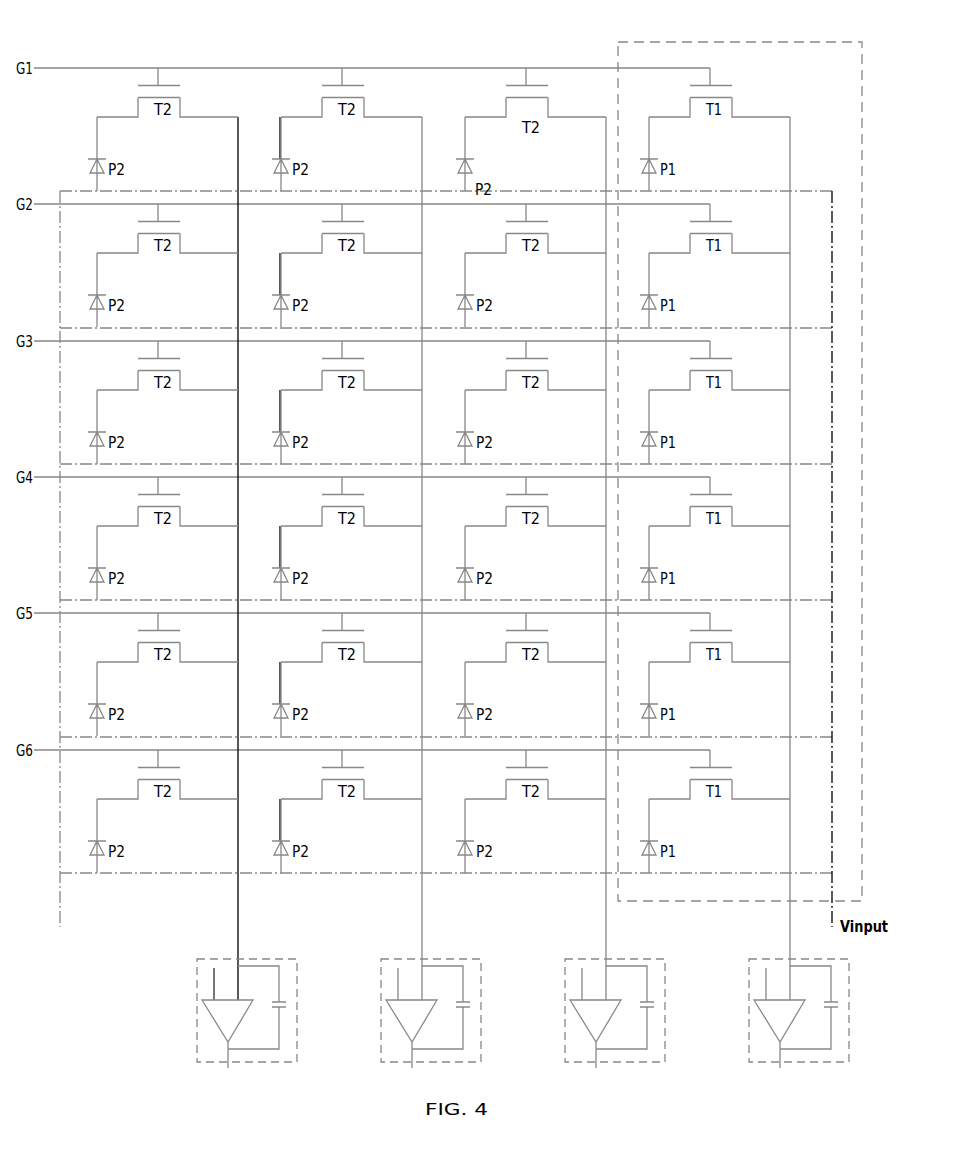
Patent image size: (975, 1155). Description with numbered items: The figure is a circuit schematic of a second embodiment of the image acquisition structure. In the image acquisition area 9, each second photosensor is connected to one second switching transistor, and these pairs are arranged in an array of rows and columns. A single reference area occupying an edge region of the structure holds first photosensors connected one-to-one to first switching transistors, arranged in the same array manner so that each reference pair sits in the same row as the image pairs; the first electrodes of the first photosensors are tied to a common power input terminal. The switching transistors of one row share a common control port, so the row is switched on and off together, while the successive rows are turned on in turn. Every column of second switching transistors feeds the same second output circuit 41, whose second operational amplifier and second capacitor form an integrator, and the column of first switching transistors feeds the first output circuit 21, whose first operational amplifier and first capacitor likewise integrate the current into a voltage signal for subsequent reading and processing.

The image acquisition area 9 is at (748, 63).
The second output circuit 41 is at (290, 1022).
The first output circuit 21 is at (842, 1022).